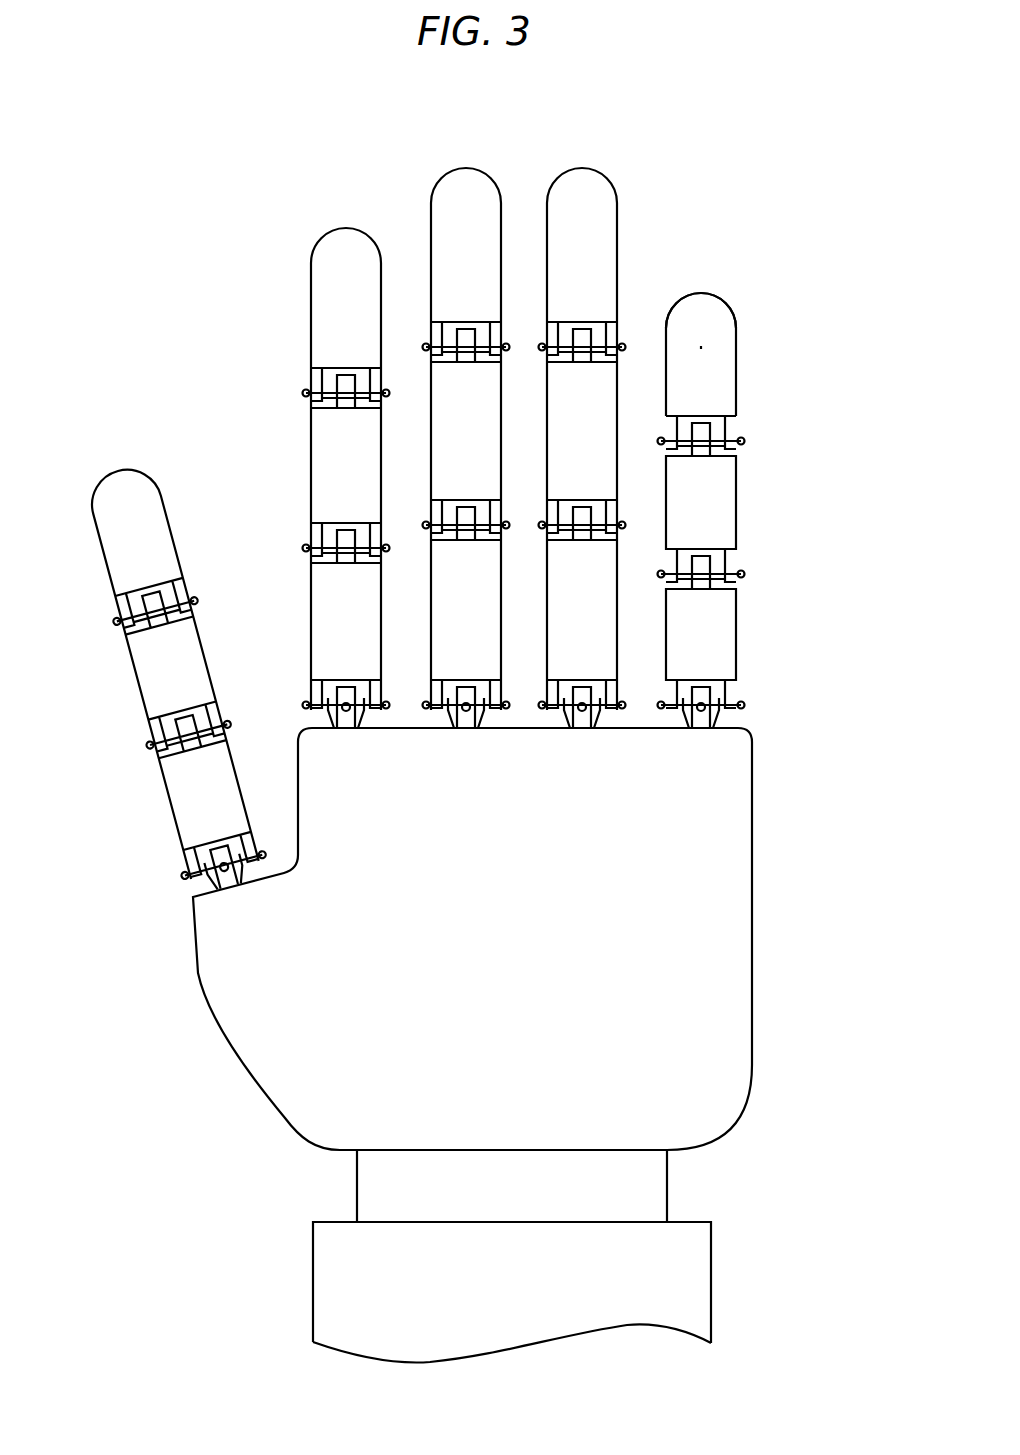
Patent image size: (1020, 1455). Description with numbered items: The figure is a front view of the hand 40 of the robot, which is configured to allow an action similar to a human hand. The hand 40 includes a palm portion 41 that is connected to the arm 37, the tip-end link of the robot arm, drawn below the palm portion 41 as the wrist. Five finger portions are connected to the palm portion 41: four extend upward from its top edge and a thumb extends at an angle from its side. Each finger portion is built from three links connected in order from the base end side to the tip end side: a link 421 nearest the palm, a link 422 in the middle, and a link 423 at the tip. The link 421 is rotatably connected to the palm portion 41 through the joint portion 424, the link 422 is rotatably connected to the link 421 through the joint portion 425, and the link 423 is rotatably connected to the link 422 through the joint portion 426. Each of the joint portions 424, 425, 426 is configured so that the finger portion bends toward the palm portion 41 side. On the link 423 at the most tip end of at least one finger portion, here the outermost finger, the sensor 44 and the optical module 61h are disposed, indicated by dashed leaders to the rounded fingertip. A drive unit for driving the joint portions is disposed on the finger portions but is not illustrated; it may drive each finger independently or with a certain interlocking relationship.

The hand 40 is at (784, 256).
The palm portion 41 is at (718, 873).
The arm 37 is at (672, 1280).
The sensor 44 is at (722, 330).
The optical module 61h is at (722, 347).
The link 421 is at (714, 646).
The link 422 is at (727, 502).
The link 423 is at (725, 388).
The joint portion 424 is at (742, 704).
The joint portion 425 is at (742, 565).
The joint portion 426 is at (742, 440).